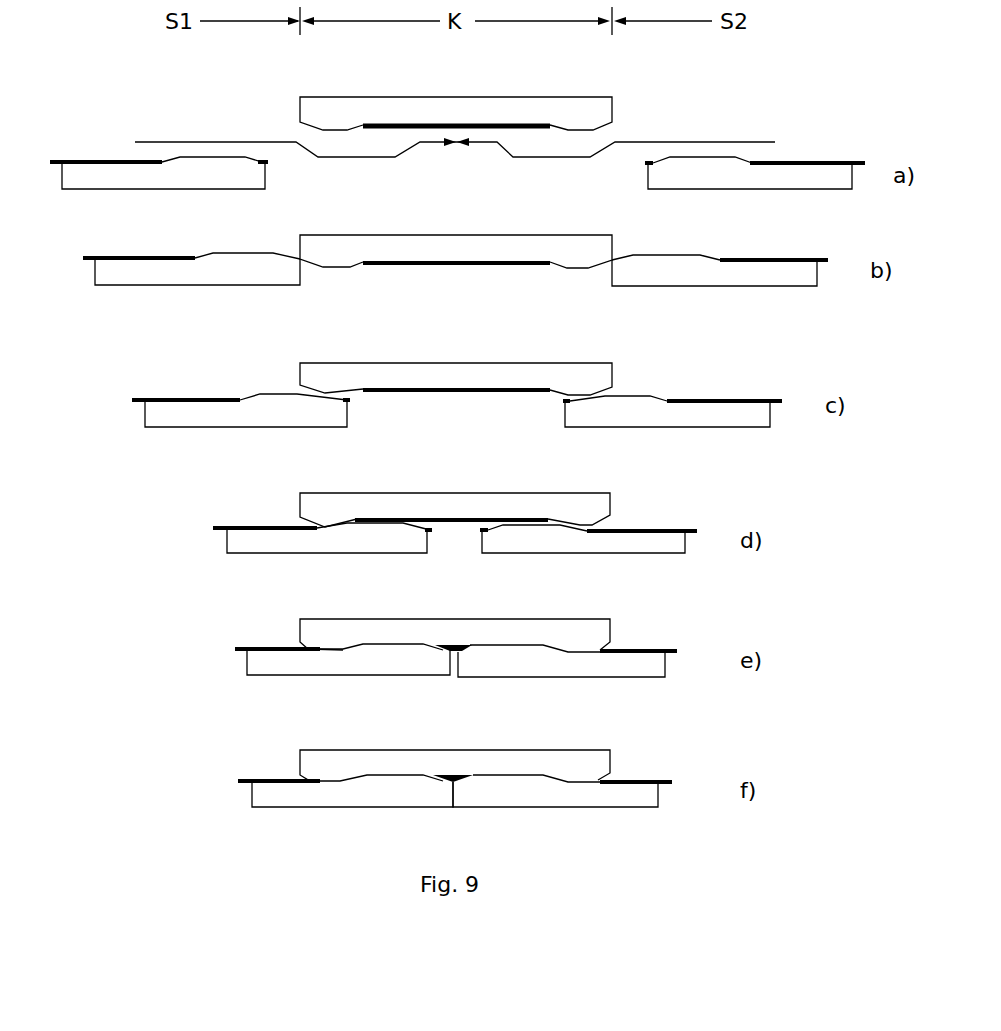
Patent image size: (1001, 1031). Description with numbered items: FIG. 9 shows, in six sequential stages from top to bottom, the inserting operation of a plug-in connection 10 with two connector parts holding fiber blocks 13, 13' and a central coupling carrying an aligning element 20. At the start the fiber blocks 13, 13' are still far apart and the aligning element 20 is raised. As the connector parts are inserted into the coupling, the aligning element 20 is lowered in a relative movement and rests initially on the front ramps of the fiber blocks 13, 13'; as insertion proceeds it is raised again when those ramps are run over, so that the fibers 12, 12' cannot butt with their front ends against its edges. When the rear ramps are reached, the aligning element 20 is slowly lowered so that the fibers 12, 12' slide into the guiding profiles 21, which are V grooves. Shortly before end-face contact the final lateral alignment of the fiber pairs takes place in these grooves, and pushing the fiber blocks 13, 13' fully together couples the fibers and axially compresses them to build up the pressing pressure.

The plug-in connection 10 is at (316, 71).
The fiber 12 is at (247, 445).
The fiber 12' is at (686, 445).
The fiber block 13 is at (257, 452).
The fiber block 13' is at (657, 452).
The aligning element 20 is at (320, 107).
The guiding profile 21 is at (518, 132).